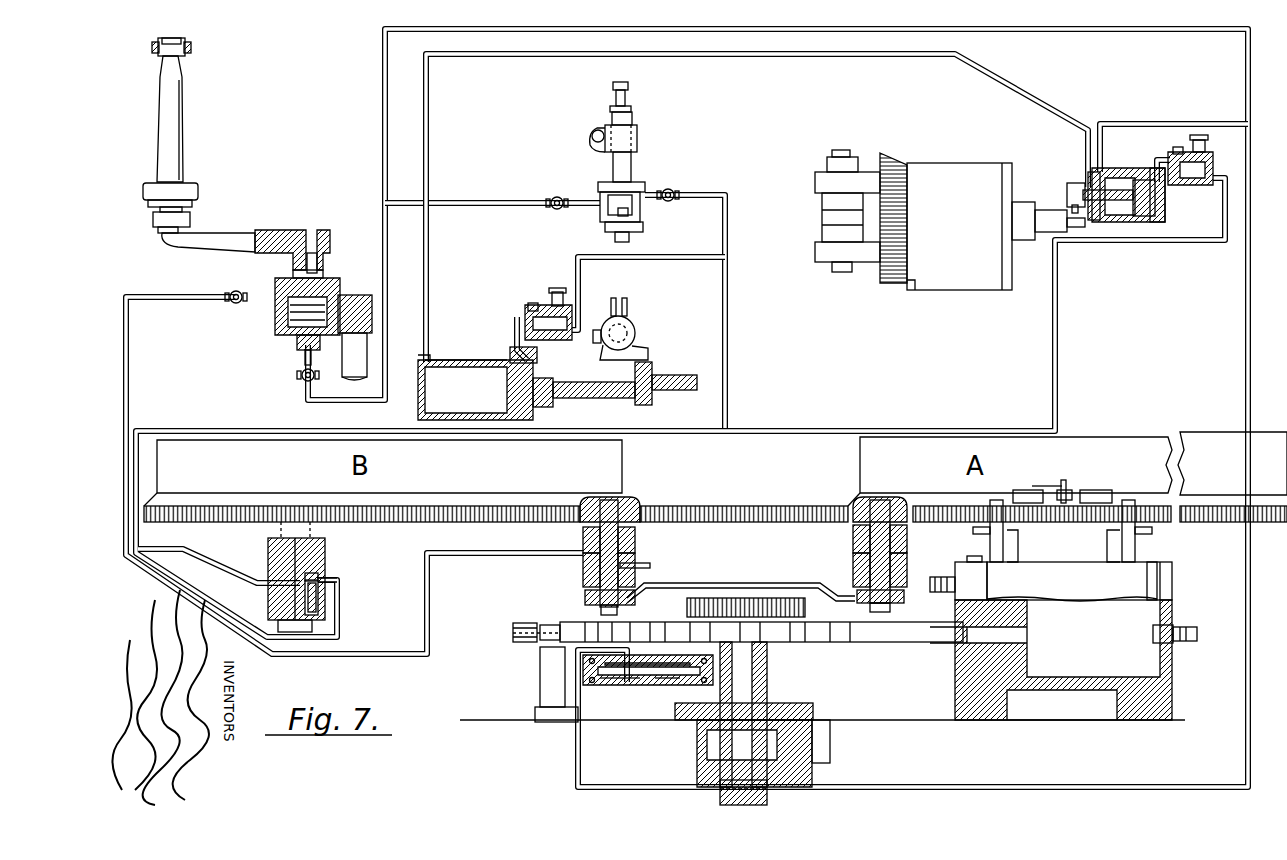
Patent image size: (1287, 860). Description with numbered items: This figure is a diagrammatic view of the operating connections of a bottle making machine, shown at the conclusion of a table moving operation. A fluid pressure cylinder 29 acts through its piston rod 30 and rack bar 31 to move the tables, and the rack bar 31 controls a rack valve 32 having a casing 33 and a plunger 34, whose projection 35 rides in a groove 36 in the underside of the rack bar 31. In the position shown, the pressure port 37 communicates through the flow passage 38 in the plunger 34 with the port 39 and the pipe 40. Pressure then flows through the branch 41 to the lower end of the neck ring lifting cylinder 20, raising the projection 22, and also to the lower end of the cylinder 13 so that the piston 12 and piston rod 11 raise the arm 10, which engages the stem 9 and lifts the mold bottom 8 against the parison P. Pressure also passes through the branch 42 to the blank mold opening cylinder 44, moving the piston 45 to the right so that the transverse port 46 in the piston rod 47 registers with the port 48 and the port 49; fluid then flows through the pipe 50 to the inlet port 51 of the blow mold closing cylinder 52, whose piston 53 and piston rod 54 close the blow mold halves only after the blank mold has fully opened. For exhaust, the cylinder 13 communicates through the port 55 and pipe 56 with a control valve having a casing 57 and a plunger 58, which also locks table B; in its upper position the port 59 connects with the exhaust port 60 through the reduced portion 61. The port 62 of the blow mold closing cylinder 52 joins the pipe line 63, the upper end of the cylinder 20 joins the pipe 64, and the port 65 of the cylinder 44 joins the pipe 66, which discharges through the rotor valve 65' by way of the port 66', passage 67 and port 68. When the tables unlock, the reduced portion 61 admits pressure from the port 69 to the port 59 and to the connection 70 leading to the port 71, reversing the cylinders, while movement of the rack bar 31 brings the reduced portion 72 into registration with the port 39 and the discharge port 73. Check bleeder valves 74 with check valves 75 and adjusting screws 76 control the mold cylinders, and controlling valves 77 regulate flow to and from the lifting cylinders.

The parison P is at (175, 128).
The mold bottom 8 is at (205, 188).
The stem 9 is at (184, 209).
The arm 10 is at (228, 240).
The piston rod 11 is at (312, 258).
The piston 12 is at (345, 296).
The cylinder 13 is at (275, 320).
The neck ring lifting cylinder 20 is at (618, 203).
The projection 22 is at (645, 229).
The fluid pressure cylinder 29 is at (1068, 688).
The piston rod 30 is at (890, 638).
The rack bar 31 is at (590, 622).
The rack valve 32 is at (675, 685).
The casing 33 is at (663, 688).
The plunger 34 is at (712, 672).
The projection 35 is at (770, 657).
The groove 36 is at (648, 655).
The port 37 is at (690, 600).
The flow passage 38 is at (613, 688).
The port 39 is at (640, 655).
The pipe 40 is at (576, 762).
The branch 41 is at (460, 203).
The branch 42 is at (1158, 123).
The blank mold opening cylinder 44 is at (1130, 222).
The piston 45 is at (1165, 212).
The transverse port 46 is at (1067, 190).
The piston rod 47 is at (1118, 218).
The port 48 is at (1100, 222).
The port 49 is at (1088, 178).
The pipe 50 is at (752, 57).
The inlet port 51 is at (440, 358).
The blow mold closing cylinder 52 is at (483, 360).
The piston 53 is at (505, 404).
The piston rod 54 is at (600, 398).
The port 55 is at (283, 290).
The pipe 56 is at (130, 383).
The casing 57 is at (583, 537).
The plunger 58 is at (612, 505).
The port 59 is at (583, 572).
The exhaust port 60 is at (635, 538).
The reduced portion 61 is at (635, 556).
The port 62 is at (540, 357).
The pipe line 63 is at (666, 258).
The pipe 64 is at (728, 218).
The port 65 is at (1147, 158).
The rotor valve 65' is at (332, 572).
The pipe 66 is at (680, 407).
The port 66' is at (337, 564).
The passage 67 is at (339, 593).
The port 68 is at (330, 607).
The port 69 is at (652, 576).
The connection 70 is at (226, 567).
The port 71 is at (280, 588).
The reduced portion 72 is at (620, 688).
The discharge port 73 is at (628, 688).
The check bleeder valve 74 is at (546, 292).
The check valve 75 is at (527, 316).
The adjusting screw 76 is at (570, 308).
The valve 77 is at (558, 196).